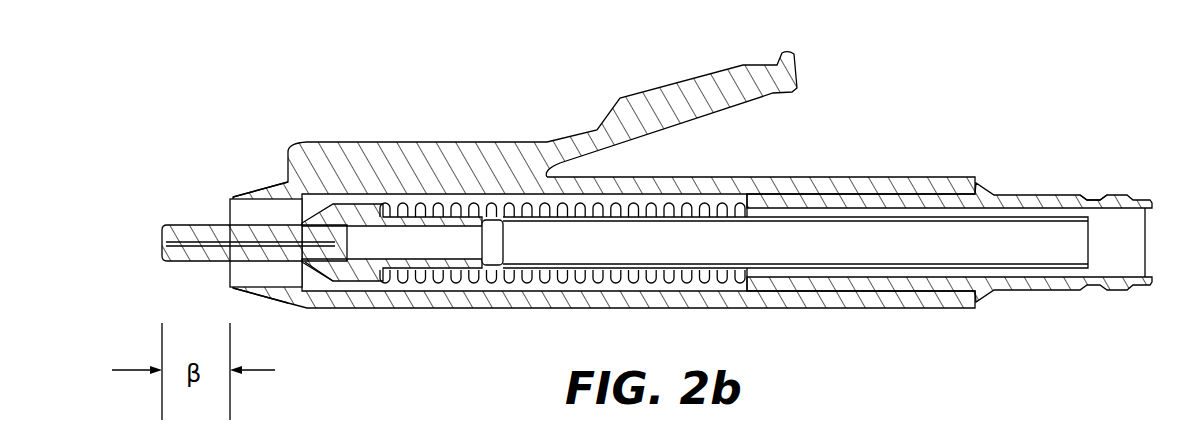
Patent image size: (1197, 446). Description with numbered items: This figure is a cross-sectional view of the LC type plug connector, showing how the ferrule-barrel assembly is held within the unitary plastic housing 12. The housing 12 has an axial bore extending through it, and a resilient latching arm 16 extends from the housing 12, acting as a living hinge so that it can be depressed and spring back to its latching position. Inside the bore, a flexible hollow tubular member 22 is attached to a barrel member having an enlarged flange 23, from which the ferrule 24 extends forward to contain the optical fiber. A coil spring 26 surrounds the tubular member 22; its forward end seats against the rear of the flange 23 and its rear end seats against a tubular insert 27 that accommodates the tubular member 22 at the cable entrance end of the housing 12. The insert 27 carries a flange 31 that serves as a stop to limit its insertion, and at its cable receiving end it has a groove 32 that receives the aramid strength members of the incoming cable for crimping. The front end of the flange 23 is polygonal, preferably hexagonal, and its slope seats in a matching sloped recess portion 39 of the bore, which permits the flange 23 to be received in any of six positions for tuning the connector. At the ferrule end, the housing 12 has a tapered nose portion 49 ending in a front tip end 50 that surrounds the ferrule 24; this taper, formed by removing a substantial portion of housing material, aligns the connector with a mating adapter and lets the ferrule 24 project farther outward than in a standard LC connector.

The housing 12 is at (782, 308).
The latching arm 16 is at (687, 80).
The flexible hollow tubular member 22 is at (895, 216).
The enlarged flange 23 is at (343, 207).
The ferrule 24 is at (173, 264).
The coil spring 26 is at (512, 281).
The insert 27 is at (1031, 290).
The flange 31 is at (985, 190).
The groove 32 is at (1097, 195).
The sloped recess portion 39 is at (341, 279).
The tapered nose portion 49 is at (258, 190).
The front tip end 50 is at (230, 198).